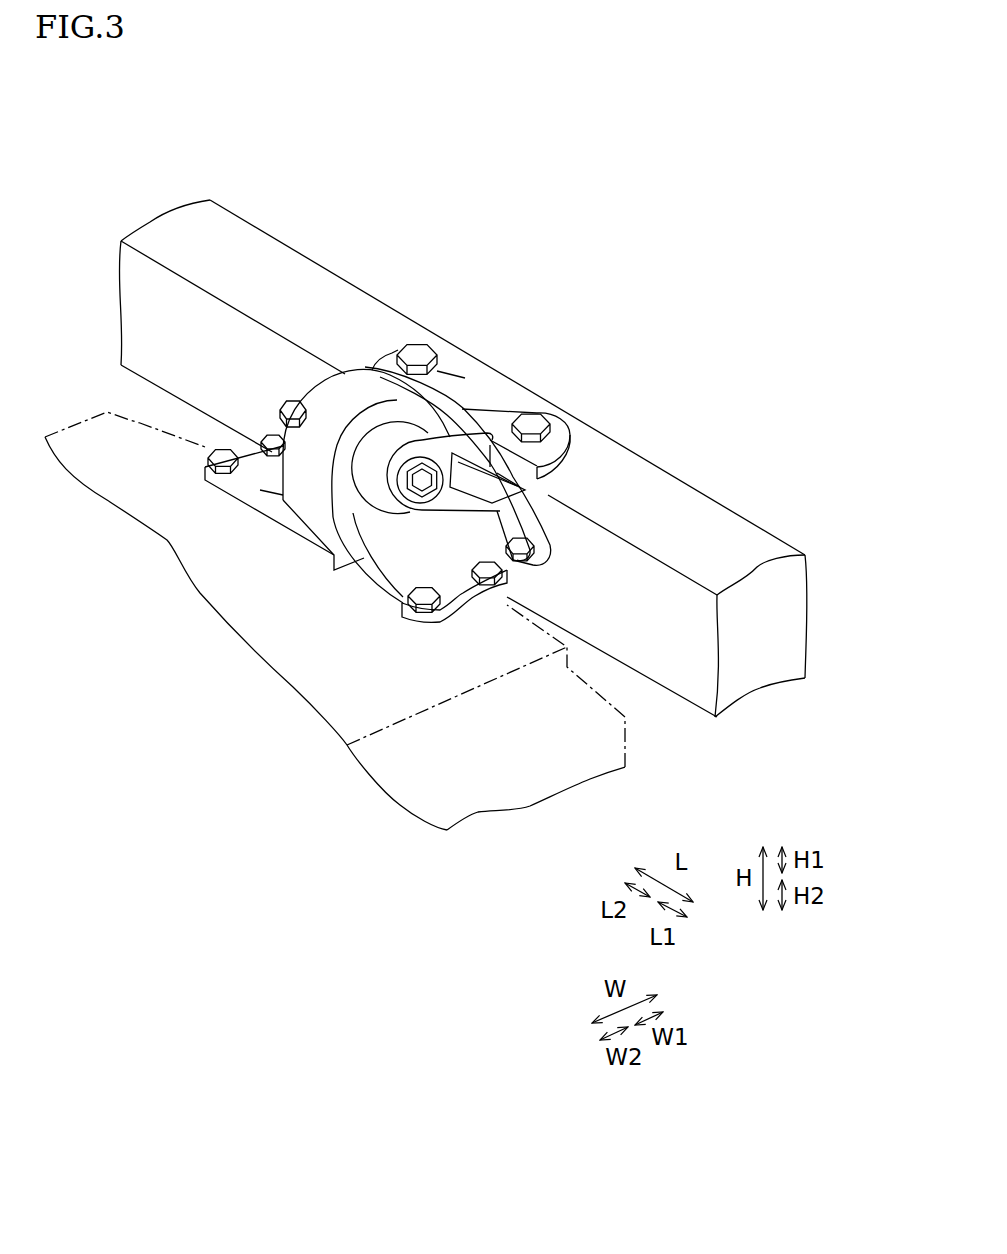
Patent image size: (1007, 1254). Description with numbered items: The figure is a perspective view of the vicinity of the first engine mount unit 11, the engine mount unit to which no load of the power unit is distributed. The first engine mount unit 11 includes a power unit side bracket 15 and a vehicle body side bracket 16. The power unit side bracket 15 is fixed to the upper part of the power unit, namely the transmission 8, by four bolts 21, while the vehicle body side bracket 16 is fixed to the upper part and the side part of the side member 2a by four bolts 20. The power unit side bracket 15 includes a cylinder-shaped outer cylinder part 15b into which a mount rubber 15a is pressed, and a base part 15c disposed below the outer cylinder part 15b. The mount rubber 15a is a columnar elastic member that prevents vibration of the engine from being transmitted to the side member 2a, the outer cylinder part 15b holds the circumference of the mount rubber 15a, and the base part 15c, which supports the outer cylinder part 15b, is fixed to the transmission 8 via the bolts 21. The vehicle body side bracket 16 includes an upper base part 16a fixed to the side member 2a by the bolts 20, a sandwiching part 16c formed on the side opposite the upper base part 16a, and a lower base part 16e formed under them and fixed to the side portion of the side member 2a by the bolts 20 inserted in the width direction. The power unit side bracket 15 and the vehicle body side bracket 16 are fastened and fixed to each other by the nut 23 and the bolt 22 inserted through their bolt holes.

The side member 2a is at (298, 250).
The transmission 8 is at (60, 425).
The first engine mount unit 11 is at (637, 445).
The power unit side bracket 15 is at (340, 373).
The mount rubber 15a is at (304, 530).
The outer cylinder part 15b is at (300, 492).
The base part 15c is at (374, 558).
The vehicle body side bracket 16 is at (548, 504).
The upper base part 16a is at (475, 392).
The sandwiching part 16c is at (455, 432).
The lower base part 16e is at (548, 532).
The bolts 20 is at (417, 343).
The bolts 21 is at (222, 452).
The bolt 22 is at (432, 492).
The nut 23 is at (282, 408).